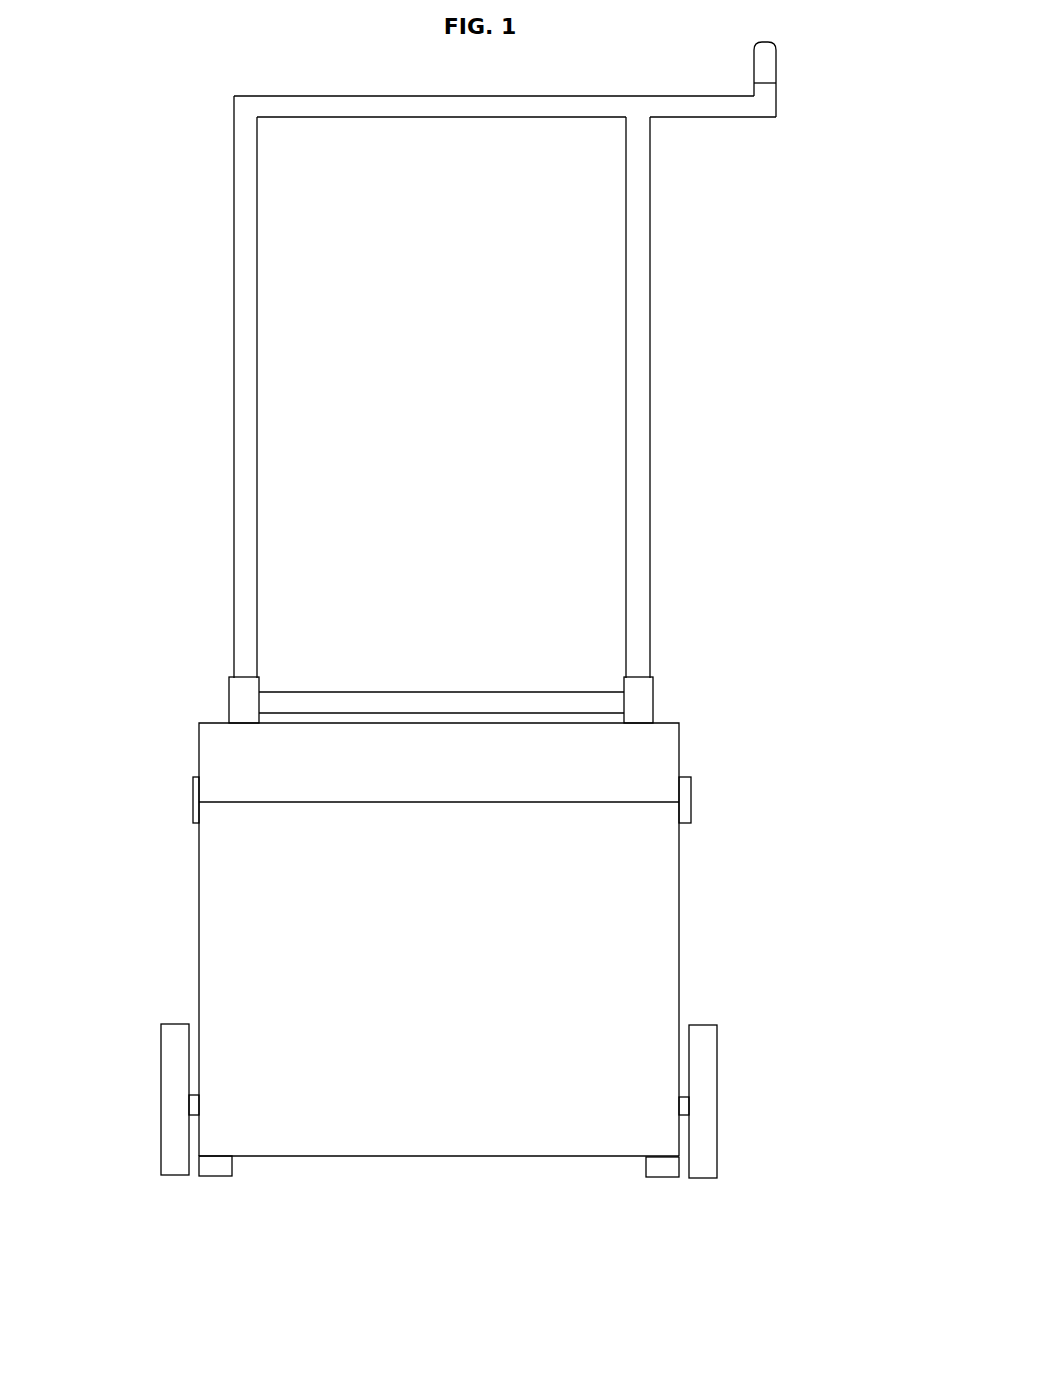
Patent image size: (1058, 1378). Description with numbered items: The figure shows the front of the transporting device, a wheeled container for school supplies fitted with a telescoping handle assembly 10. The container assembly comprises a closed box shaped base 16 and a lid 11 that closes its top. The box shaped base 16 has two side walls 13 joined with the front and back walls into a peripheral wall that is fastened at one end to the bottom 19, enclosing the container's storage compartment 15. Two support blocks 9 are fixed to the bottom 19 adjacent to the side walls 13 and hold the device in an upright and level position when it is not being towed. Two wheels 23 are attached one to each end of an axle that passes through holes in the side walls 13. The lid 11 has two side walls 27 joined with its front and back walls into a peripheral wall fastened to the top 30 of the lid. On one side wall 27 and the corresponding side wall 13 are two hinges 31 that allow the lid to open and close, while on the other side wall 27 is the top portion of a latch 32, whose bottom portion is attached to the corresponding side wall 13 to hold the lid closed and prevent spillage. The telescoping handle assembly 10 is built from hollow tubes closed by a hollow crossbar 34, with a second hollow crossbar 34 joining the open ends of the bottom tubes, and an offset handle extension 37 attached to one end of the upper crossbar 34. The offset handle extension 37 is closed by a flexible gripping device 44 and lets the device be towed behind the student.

The telescoping handle assembly 10 is at (207, 348).
The hollow crossbar 34 is at (392, 119).
The offset handle extension 37 is at (730, 119).
The flexible gripping device 44 is at (783, 50).
The lid 11 is at (678, 694).
The top of the lid 30 is at (446, 721).
The side walls of the lid 27 is at (198, 754).
The hinges 31 is at (185, 796).
The latch 32 is at (697, 805).
The side walls 13 is at (197, 980).
The container storage compartment 15 is at (178, 884).
The bottom 19 is at (413, 1160).
The wheels 23 is at (162, 1151).
The support blocks 9 is at (216, 1180).
The box shaped base 16 is at (598, 1184).